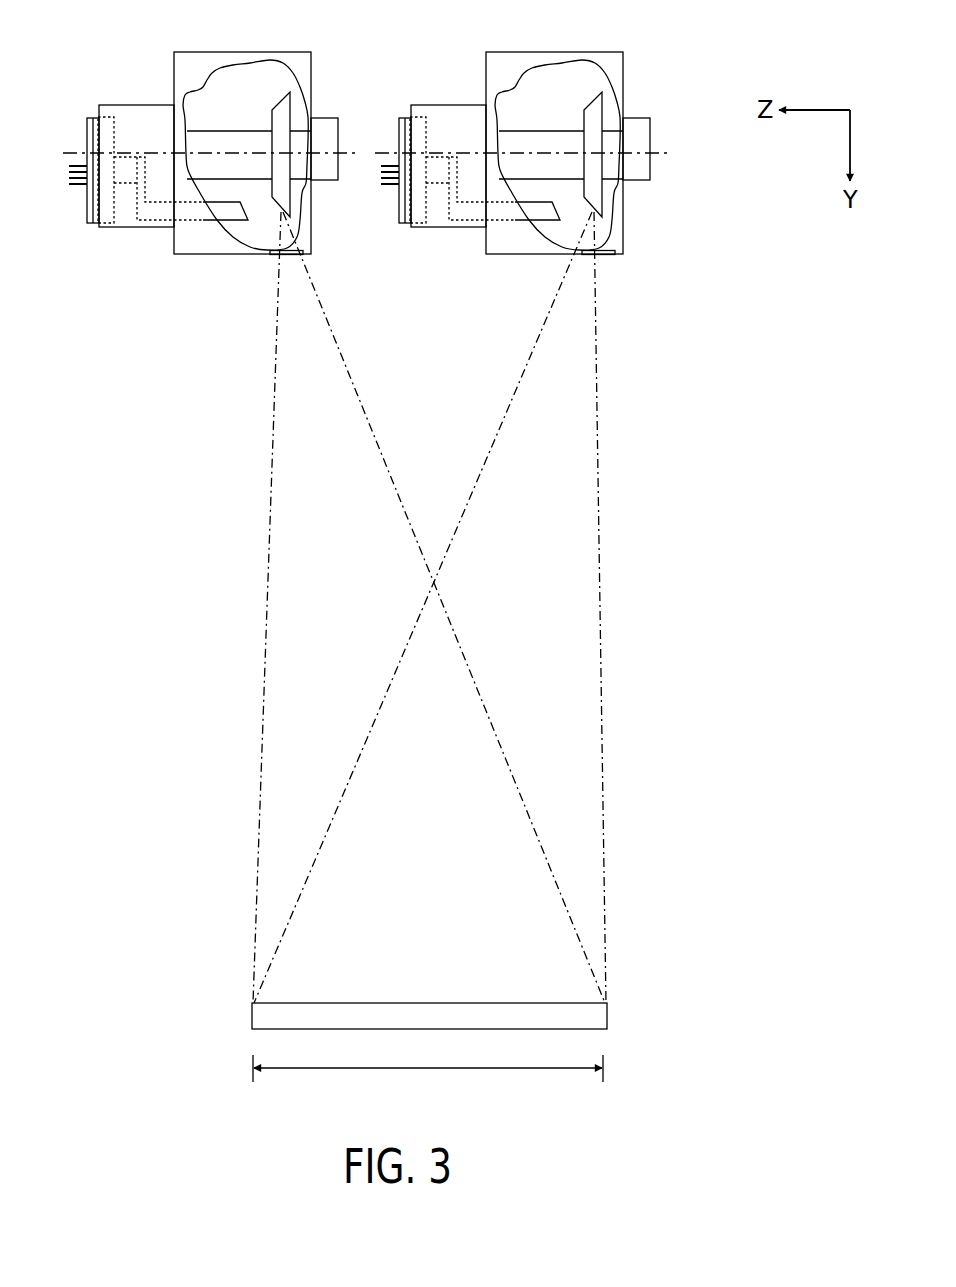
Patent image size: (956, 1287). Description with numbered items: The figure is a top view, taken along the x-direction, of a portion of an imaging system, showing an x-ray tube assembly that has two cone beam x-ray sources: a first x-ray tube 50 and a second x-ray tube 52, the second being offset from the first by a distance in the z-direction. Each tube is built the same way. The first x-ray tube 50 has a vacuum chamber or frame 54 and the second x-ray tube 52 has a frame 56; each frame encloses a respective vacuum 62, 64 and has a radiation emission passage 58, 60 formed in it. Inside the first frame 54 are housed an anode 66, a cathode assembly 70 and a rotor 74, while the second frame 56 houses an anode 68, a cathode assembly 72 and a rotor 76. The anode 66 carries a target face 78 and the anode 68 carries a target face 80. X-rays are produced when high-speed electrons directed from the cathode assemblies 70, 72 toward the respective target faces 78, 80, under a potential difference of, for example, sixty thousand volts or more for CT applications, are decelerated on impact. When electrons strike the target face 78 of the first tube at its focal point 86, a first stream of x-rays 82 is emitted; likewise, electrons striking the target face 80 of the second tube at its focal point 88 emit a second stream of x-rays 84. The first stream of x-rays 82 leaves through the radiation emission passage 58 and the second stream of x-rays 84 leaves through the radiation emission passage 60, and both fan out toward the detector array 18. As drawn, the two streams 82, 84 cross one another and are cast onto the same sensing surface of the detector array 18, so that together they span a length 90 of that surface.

The detector array 18 is at (433, 1003).
The first x-ray tube 50 is at (102, 78).
The second x-ray tube 52 is at (410, 75).
The frame 54 is at (174, 83).
The frame 56 is at (486, 86).
The radiation emission passage 58 is at (273, 263).
The radiation emission passage 60 is at (602, 264).
The vacuum 62 is at (269, 87).
The vacuum 64 is at (582, 88).
The anode 66 is at (271, 118).
The anode 68 is at (583, 118).
The cathode assembly 70 is at (156, 176).
The cathode assembly 72 is at (466, 176).
The rotor 74 is at (323, 185).
The rotor 76 is at (635, 185).
The target face 78 is at (244, 122).
The target face 80 is at (556, 122).
The first stream of x-rays 82 is at (358, 423).
The second stream of x-rays 84 is at (591, 423).
The focal point 86 is at (271, 214).
The focal point 88 is at (583, 214).
The length 90 is at (412, 1068).